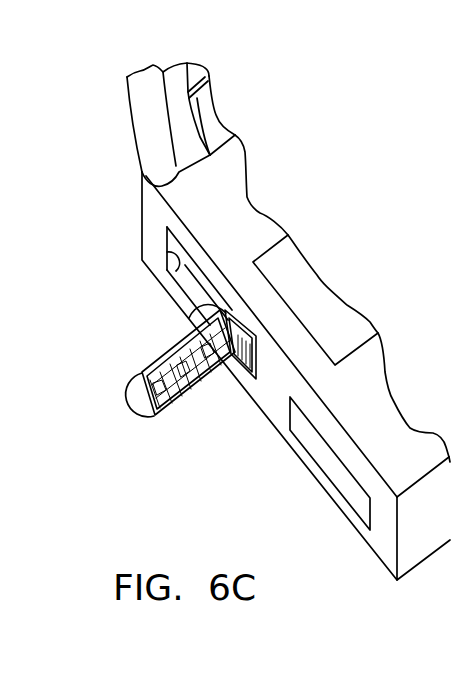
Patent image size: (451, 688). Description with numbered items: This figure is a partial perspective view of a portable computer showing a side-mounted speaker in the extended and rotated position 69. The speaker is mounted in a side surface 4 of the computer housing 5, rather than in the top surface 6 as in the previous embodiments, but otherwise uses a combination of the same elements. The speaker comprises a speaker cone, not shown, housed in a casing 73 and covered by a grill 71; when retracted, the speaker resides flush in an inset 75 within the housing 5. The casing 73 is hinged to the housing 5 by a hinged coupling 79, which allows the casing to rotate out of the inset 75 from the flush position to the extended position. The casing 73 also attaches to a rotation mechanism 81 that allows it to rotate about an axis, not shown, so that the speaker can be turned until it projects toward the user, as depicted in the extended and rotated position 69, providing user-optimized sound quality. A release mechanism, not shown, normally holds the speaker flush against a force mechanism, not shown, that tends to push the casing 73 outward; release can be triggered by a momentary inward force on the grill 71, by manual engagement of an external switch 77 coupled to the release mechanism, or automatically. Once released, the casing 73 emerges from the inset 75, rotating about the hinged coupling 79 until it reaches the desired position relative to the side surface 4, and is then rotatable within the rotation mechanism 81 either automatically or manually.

The side surface 4 is at (278, 420).
The computer housing 5 is at (362, 555).
The top surface 6 is at (420, 437).
The extended and rotated position 69 is at (112, 363).
The grill 71 is at (176, 408).
The casing 73 is at (135, 402).
The inset 75 is at (172, 256).
The external switch 77 is at (252, 382).
The hinged coupling 79 is at (215, 310).
The rotation mechanism 81 is at (230, 366).